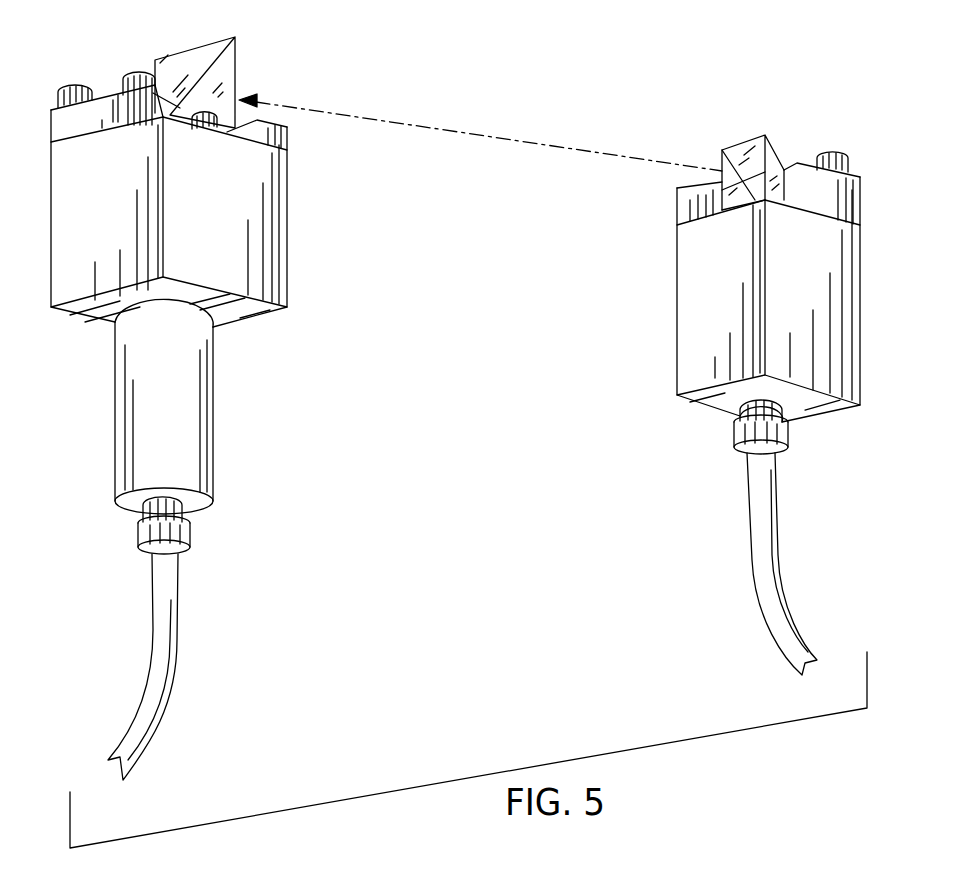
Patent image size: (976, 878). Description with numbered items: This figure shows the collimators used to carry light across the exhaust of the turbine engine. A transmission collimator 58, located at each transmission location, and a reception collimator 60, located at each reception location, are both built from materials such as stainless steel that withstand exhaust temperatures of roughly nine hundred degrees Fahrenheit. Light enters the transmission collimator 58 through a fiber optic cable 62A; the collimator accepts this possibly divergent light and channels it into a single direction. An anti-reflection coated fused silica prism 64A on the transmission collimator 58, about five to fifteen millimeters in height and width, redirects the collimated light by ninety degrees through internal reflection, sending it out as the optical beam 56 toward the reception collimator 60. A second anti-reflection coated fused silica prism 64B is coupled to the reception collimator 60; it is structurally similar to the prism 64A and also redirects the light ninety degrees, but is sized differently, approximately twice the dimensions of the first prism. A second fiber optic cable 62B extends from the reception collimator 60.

The optical beam 56 is at (497, 136).
The transmission collimator 58 is at (861, 246).
The reception collimator 60 is at (289, 226).
The fiber optic cable 62A is at (779, 568).
The fiber optic cable 62B is at (183, 622).
The anti-reflection coated fused silica prism 64A is at (724, 150).
The second anti-reflection coated fused silica prism 64B is at (236, 37).